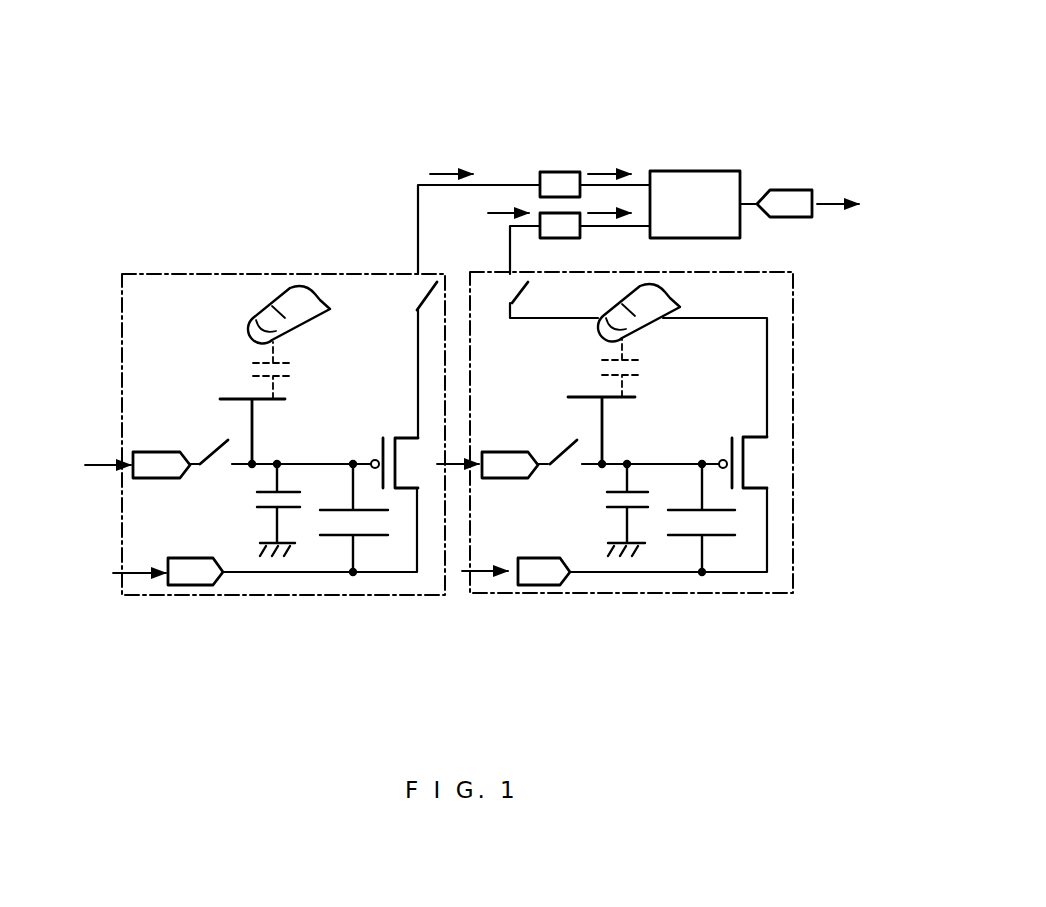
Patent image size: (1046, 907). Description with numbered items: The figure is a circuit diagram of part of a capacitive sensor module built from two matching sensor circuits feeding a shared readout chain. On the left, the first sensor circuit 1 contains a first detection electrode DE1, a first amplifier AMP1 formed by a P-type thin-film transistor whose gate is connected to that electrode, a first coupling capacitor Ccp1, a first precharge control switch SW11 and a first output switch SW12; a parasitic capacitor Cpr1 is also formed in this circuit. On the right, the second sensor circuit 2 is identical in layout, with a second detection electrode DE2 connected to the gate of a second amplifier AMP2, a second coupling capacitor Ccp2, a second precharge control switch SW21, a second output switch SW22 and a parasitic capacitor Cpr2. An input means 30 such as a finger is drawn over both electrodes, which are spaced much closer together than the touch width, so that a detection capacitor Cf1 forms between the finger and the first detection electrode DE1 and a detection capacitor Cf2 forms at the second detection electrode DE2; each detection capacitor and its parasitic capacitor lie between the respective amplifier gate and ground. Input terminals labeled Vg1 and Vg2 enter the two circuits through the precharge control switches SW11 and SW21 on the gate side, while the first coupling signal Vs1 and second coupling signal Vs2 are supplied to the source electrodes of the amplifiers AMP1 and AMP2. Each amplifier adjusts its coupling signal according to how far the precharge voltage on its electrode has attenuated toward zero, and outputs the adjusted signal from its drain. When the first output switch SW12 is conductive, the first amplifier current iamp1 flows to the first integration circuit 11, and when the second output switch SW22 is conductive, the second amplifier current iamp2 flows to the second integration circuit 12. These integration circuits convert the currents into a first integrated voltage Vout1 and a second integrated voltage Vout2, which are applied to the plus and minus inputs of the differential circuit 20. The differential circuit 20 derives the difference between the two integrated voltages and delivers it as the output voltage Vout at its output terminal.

The first sensor circuit 1 is at (145, 597).
The second sensor circuit 2 is at (497, 593).
The first integration circuit 11 is at (556, 172).
The second integration circuit 12 is at (558, 238).
The differential circuit 20 is at (713, 171).
The input means 30 is at (318, 300).
The first precharge control switch SW11 is at (218, 466).
The first output switch SW12 is at (415, 292).
The second precharge control switch SW21 is at (567, 466).
The second output switch SW22 is at (505, 283).
The detection capacitor Cf1 is at (250, 368).
The detection capacitor Cf2 is at (598, 365).
The first detection electrode DE1 is at (265, 401).
The second detection electrode DE2 is at (612, 399).
The first amplifier AMP1 is at (400, 437).
The second amplifier AMP2 is at (755, 437).
The parasitic capacitor Cpr1 is at (292, 510).
The first coupling capacitor Ccp1 is at (372, 538).
The parasitic capacitor Cpr2 is at (637, 507).
The second coupling capacitor Ccp2 is at (722, 538).
The first gate voltage terminal Vg1 is at (100, 462).
The first coupling signal Vs1 is at (128, 570).
The second gate voltage terminal Vg2 is at (448, 460).
The second coupling signal Vs2 is at (480, 568).
The first amplifier current iamp1 is at (436, 170).
The second amplifier current iamp2 is at (494, 208).
The first integrated voltage Vout1 is at (598, 170).
The second integrated voltage Vout2 is at (600, 210).
The output voltage Vout is at (830, 202).